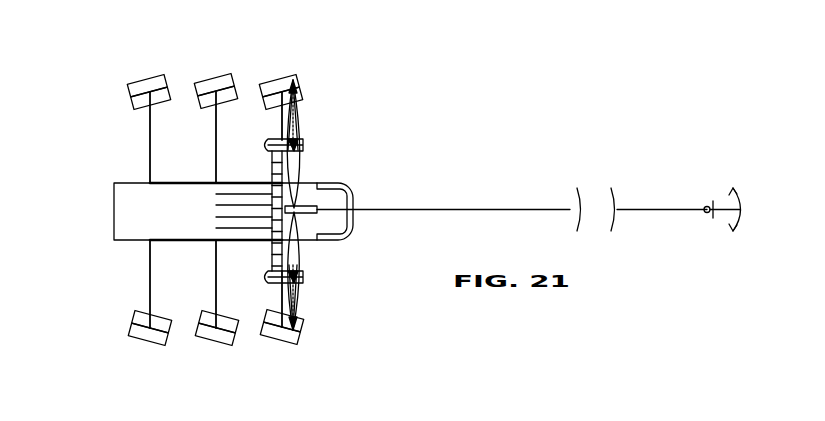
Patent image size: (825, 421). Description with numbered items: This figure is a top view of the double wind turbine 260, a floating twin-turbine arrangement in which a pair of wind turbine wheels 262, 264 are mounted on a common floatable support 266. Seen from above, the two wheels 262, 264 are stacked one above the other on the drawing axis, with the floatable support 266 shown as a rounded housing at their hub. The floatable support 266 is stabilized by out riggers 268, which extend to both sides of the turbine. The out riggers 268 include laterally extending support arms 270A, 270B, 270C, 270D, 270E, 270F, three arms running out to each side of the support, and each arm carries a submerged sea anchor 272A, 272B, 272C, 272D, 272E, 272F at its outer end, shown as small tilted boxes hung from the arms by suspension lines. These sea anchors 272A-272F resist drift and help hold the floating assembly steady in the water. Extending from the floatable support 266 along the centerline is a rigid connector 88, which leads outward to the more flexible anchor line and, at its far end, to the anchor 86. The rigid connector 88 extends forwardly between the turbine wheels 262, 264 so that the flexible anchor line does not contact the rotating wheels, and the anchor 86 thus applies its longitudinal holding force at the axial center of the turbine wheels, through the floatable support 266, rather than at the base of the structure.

The anchor 86 is at (747, 203).
The rigid connector 88 is at (303, 207).
The double wind turbine 260 is at (318, 135).
The wind turbine wheel 262 is at (300, 302).
The wind turbine wheel 264 is at (300, 111).
The common floatable support 266 is at (318, 178).
The out riggers 268 is at (200, 84).
The support arm 270A is at (150, 270).
The support arm 270B is at (215, 283).
The support arm 270C is at (282, 296).
The support arm 270D is at (150, 143).
The support arm 270E is at (214, 158).
The support arm 270F is at (272, 110).
The submerged sea anchor 272A is at (145, 338).
The submerged sea anchor 272B is at (263, 364).
The submerged sea anchor 272C is at (327, 363).
The submerged sea anchor 272D is at (149, 79).
The submerged sea anchor 272E is at (204, 82).
The submerged sea anchor 272F is at (271, 80).